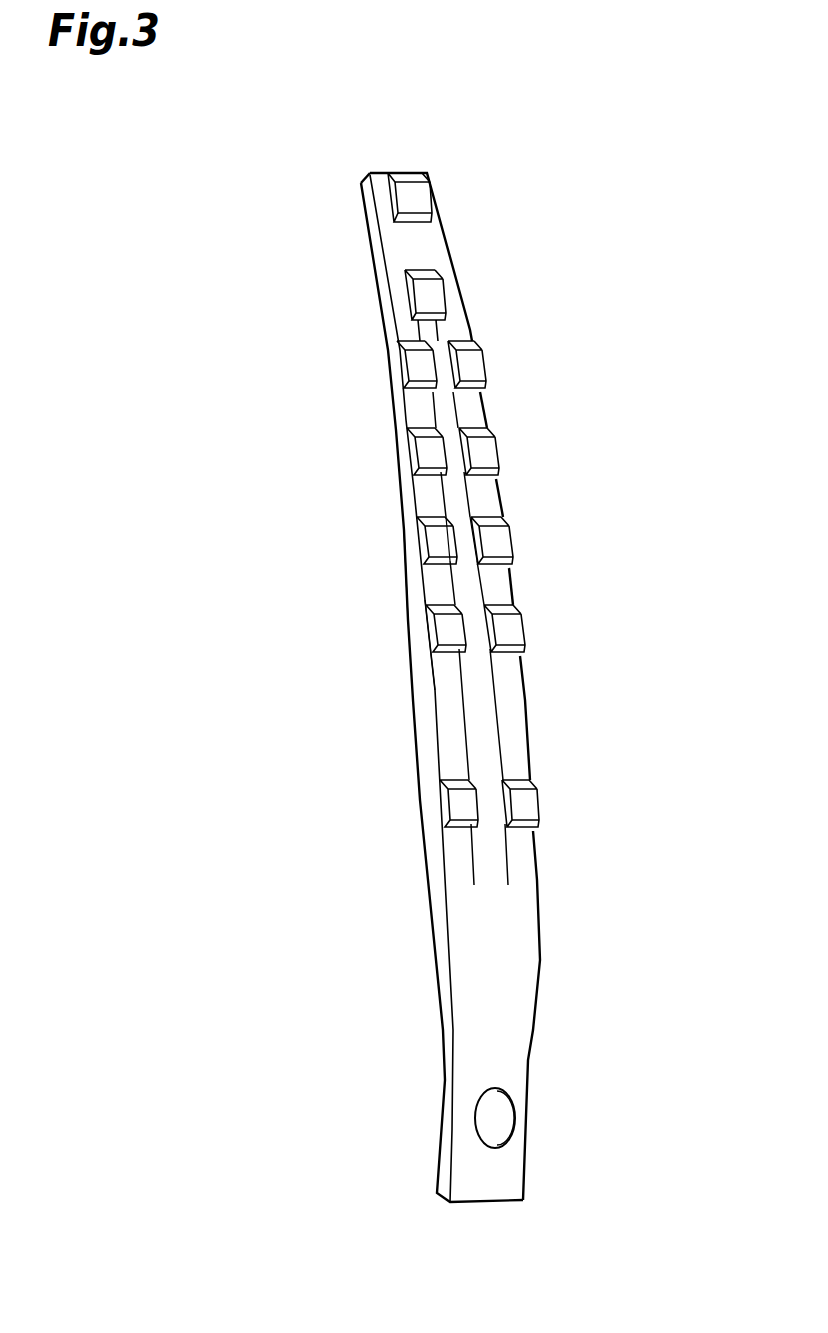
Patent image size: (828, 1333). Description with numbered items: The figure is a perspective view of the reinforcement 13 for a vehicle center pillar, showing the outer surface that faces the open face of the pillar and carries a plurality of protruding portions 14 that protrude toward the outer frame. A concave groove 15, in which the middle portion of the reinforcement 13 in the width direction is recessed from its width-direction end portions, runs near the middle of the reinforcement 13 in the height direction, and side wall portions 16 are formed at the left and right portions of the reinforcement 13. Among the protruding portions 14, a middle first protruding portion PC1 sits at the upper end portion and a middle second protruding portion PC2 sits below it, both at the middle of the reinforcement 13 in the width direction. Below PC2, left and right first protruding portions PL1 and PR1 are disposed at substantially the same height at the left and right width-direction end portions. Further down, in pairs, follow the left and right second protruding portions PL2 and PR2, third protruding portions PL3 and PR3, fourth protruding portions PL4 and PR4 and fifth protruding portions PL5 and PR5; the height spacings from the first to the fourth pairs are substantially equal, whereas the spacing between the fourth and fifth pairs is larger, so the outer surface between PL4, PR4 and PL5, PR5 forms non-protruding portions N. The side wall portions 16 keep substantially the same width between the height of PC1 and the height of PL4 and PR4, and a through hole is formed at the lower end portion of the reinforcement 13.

The reinforcement 13 is at (308, 186).
The protruding portions 14 is at (507, 337).
The concave groove 15 is at (485, 727).
The side wall portions 16 is at (413, 745).
The non-protruding portions N is at (420, 706).
The middle first protruding portion PC1 is at (415, 197).
The middle second protruding portion PC2 is at (428, 296).
The left first protruding portion PL1 is at (416, 367).
The left second protruding portion PL2 is at (430, 458).
The left third protruding portion PL3 is at (437, 542).
The left fourth protruding portion PL4 is at (445, 630).
The left fifth protruding portion PL5 is at (460, 808).
The right first protruding portion PR1 is at (465, 367).
The right second protruding portion PR2 is at (483, 448).
The right third protruding portion PR3 is at (497, 540).
The right fourth protruding portion PR4 is at (507, 628).
The right fifth protruding portion PR5 is at (532, 808).